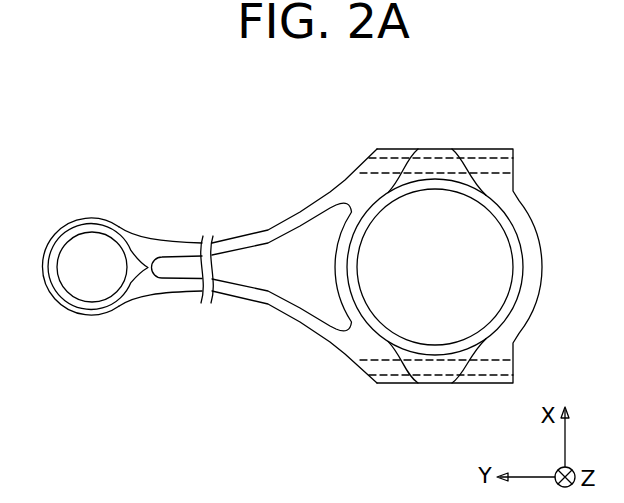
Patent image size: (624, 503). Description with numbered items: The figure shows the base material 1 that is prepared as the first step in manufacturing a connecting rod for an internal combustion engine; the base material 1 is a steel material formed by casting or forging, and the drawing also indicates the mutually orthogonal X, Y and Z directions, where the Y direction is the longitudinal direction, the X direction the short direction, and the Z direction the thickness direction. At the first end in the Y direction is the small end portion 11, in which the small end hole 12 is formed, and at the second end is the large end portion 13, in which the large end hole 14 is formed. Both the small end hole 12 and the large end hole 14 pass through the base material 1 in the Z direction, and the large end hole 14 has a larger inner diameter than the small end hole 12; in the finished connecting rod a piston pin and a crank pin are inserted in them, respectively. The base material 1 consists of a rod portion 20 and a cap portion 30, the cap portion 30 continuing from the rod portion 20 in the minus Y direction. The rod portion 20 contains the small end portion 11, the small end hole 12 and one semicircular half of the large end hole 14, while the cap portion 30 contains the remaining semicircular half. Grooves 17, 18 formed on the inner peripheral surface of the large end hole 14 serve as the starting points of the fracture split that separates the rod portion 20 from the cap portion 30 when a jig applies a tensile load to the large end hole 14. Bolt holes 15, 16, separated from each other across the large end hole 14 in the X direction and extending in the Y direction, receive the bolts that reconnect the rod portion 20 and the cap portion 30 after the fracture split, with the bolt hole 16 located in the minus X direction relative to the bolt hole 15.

The base material 1 is at (168, 128).
The small end portion 11 is at (62, 228).
The small end hole 12 is at (98, 252).
The large end portion 13 is at (497, 148).
The large end hole 14 is at (518, 262).
The bolt hole 15 is at (366, 170).
The bolt hole 16 is at (366, 364).
The groove 17 is at (436, 185).
The groove 18 is at (437, 345).
The rod portion 20 is at (268, 229).
The cap portion 30 is at (528, 230).